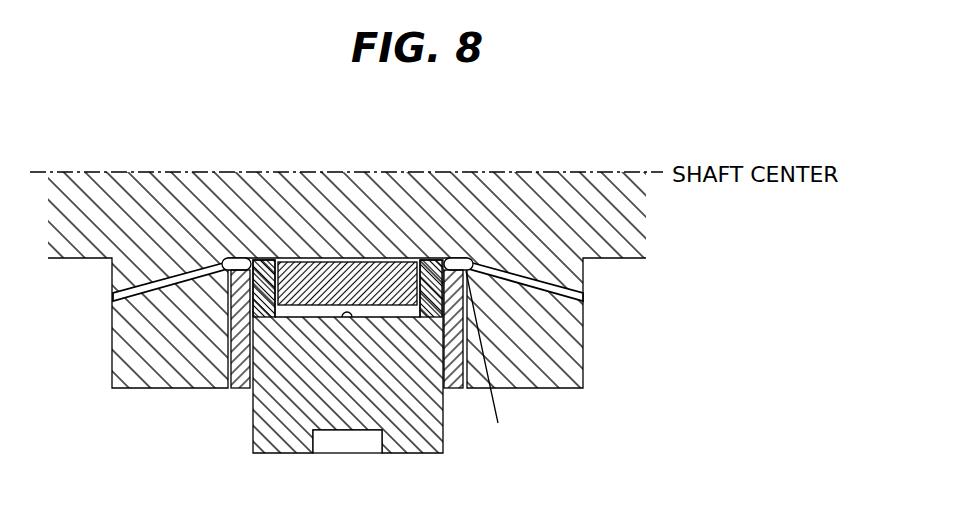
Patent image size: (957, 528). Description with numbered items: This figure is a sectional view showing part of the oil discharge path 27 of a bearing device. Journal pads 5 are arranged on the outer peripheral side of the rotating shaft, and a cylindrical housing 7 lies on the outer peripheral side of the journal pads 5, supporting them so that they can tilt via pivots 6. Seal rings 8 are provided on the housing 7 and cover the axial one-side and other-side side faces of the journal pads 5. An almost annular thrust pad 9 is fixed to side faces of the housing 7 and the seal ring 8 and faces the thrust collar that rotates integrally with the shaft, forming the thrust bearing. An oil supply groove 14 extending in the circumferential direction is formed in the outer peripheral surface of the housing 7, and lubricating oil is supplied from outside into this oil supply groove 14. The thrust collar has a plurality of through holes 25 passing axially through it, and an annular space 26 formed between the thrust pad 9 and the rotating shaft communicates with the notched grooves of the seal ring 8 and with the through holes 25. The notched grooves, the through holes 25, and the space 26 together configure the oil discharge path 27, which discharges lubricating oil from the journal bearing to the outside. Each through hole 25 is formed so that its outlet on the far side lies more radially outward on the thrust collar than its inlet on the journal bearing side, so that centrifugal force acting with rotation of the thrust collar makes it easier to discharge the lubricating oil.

The journal pad 5 is at (318, 259).
The pivot 6 is at (350, 309).
The housing 7 is at (414, 455).
The seal ring 8 is at (268, 259).
The thrust pad 9 is at (240, 390).
The oil supply groove 14 is at (333, 446).
The through hole 25 is at (533, 283).
The space 26 is at (455, 262).
The oil discharge path 27 is at (240, 251).